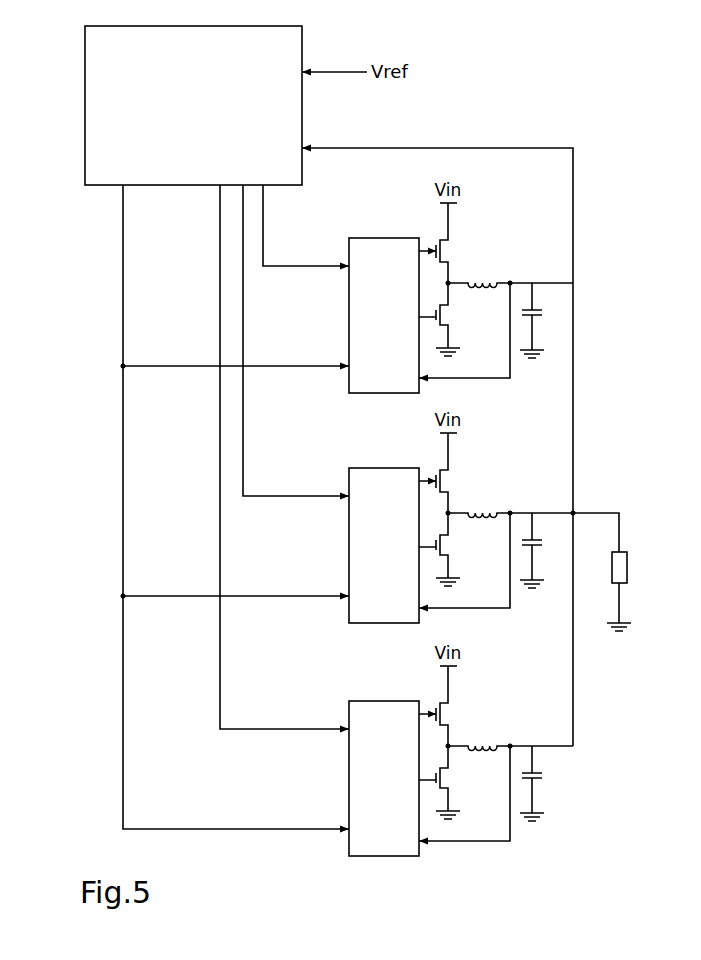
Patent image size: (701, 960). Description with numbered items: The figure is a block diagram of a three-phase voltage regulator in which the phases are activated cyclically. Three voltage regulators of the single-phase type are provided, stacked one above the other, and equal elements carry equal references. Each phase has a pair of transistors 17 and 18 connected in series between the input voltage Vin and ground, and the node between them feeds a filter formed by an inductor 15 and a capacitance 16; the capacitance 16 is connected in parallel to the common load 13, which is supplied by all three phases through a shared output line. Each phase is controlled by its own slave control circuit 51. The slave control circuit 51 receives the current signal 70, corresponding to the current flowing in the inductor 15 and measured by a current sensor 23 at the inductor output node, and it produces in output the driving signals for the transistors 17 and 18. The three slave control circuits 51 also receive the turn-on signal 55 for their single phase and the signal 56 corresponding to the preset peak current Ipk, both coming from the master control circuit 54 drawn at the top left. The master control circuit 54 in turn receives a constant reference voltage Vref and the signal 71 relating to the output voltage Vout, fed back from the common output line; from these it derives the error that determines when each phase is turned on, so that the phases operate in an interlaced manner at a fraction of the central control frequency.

The master control circuit 54 is at (184, 114).
The slave control circuit 51 is at (374, 327).
The turn-on signal 55 is at (308, 268).
The preset peak current signal 56 is at (123, 475).
The output voltage signal 71 is at (512, 148).
The current signal 70 is at (455, 378).
The transistor 17 is at (450, 254).
The transistor 18 is at (448, 322).
The inductor 15 is at (492, 291).
The capacitance 16 is at (540, 317).
The current sensor 23 is at (511, 279).
The load 13 is at (627, 566).